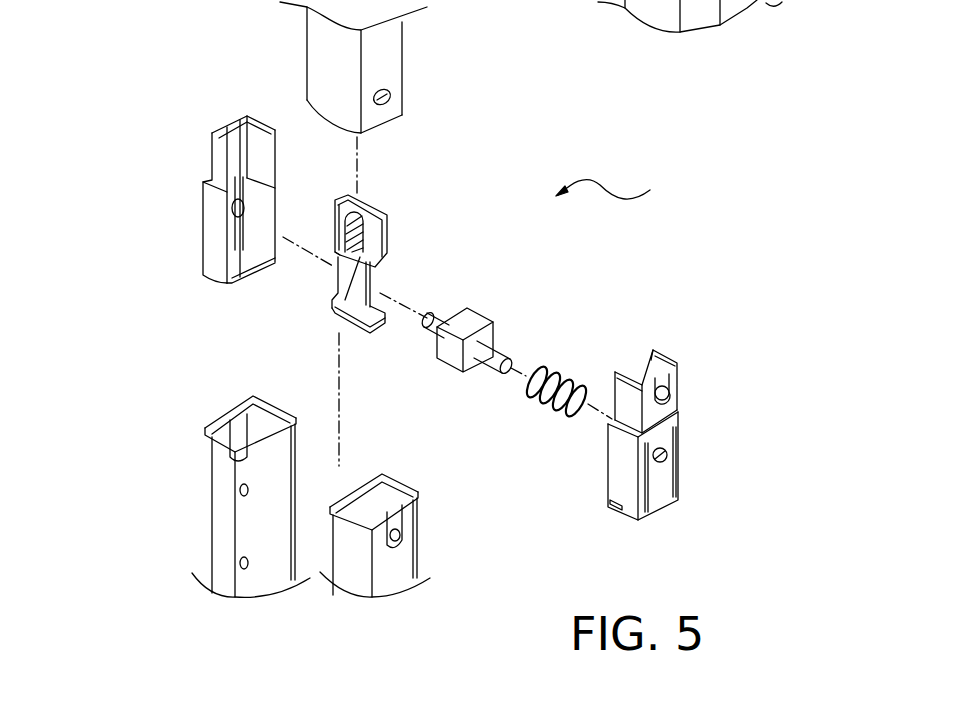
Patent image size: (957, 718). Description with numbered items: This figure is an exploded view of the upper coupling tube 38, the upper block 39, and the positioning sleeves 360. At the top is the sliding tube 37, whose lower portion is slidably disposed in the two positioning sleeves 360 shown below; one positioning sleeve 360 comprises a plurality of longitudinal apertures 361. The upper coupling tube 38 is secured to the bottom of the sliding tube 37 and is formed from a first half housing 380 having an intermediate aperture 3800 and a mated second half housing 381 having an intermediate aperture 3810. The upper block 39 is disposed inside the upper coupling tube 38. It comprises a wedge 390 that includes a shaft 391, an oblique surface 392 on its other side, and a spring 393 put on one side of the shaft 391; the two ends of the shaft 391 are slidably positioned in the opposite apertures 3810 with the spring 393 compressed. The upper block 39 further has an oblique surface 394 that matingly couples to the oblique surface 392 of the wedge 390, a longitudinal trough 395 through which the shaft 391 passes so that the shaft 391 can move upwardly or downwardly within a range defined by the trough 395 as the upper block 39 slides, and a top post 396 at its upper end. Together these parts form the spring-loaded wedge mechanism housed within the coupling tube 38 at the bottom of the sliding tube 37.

The sliding tube 37 is at (392, 53).
The upper coupling tube 38 is at (618, 182).
The upper block 39 is at (388, 228).
The oblique surface 394 is at (377, 277).
The longitudinal trough 395 is at (337, 280).
The top post 396 is at (373, 202).
The wedge 390 is at (485, 315).
The shaft 391 is at (447, 323).
The oblique surface 392 is at (440, 350).
The spring 393 is at (560, 417).
The first half housing 380 is at (218, 160).
The intermediate aperture 3800 is at (237, 210).
The second half housing 381 is at (678, 393).
The intermediate aperture 3810 is at (665, 455).
The positioning sleeve 360 is at (207, 502).
The longitudinal aperture 361 is at (255, 492).